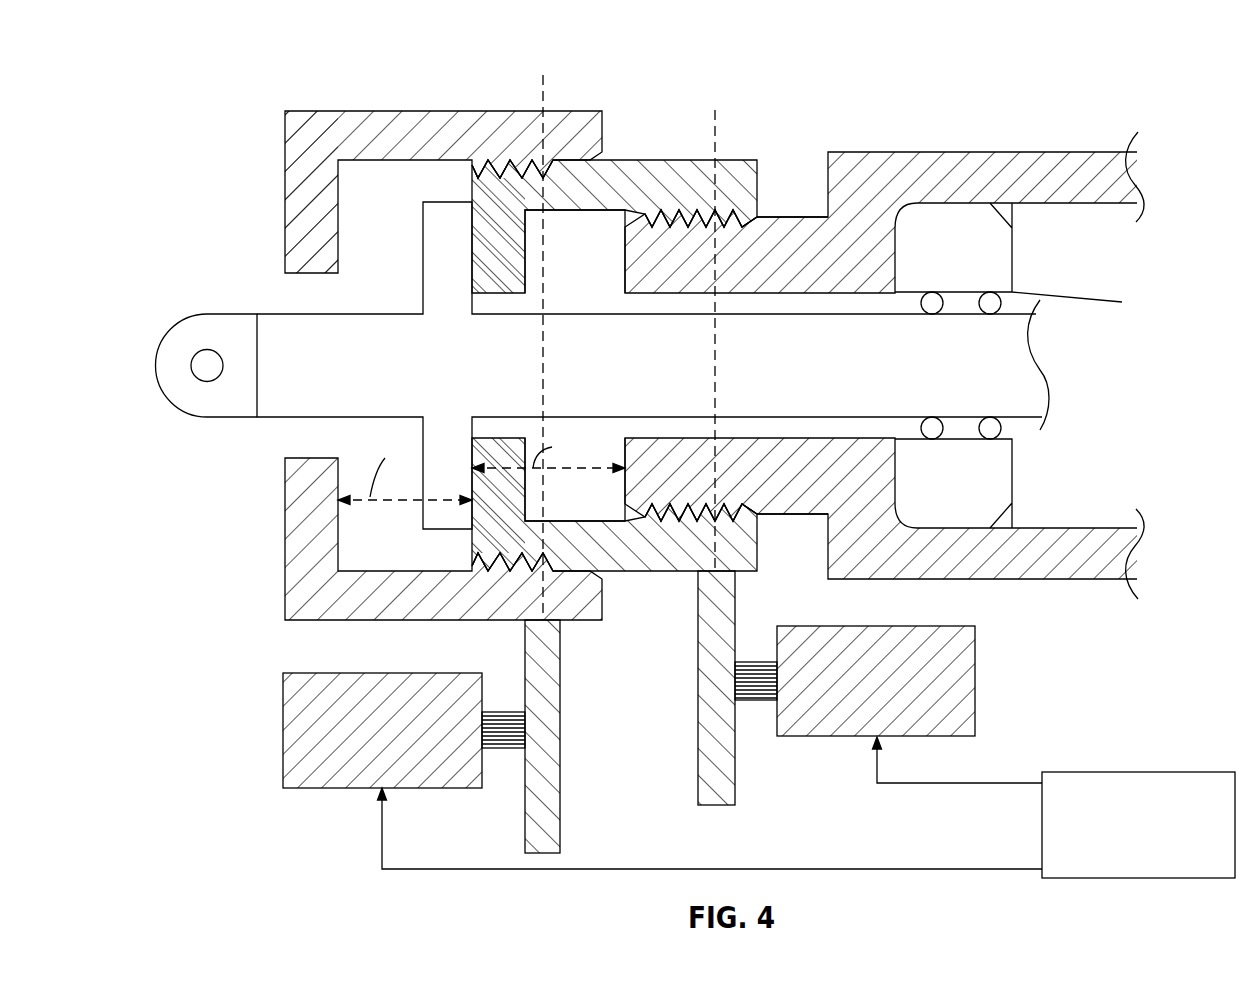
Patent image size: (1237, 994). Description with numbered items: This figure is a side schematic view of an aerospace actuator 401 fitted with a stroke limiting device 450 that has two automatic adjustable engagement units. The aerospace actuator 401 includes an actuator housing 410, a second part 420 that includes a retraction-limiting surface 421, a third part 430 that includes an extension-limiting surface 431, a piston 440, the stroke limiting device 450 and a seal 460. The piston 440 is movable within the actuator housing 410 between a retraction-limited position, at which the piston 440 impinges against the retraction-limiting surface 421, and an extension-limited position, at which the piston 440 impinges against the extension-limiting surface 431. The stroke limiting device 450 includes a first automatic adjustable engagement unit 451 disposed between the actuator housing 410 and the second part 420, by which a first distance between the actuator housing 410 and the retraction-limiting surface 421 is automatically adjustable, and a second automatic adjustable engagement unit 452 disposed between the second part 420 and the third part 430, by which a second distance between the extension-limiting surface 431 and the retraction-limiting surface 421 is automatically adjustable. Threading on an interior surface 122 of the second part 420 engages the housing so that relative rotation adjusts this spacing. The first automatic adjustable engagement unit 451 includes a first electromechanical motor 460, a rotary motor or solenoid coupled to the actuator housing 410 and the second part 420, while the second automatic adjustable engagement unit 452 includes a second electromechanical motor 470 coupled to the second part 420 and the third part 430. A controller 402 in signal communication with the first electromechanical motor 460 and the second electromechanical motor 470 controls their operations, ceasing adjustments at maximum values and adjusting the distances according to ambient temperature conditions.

The aerospace actuator 401 is at (186, 53).
The controller 402 is at (1110, 772).
The actuator housing 410 is at (889, 140).
The second part 420 is at (654, 147).
The retraction-limiting surface 421 is at (478, 277).
The third part 430 is at (362, 100).
The extension-limiting surface 431 is at (335, 247).
The piston 440 is at (218, 301).
The stroke limiting device 450 is at (578, 122).
The first automatic adjustable engagement unit 451 is at (757, 217).
The second automatic adjustable engagement unit 452 is at (478, 170).
The first electromechanical motor 460 is at (996, 254).
The second electromechanical motor 470 is at (283, 725).
The interior surface 122 is at (607, 212).